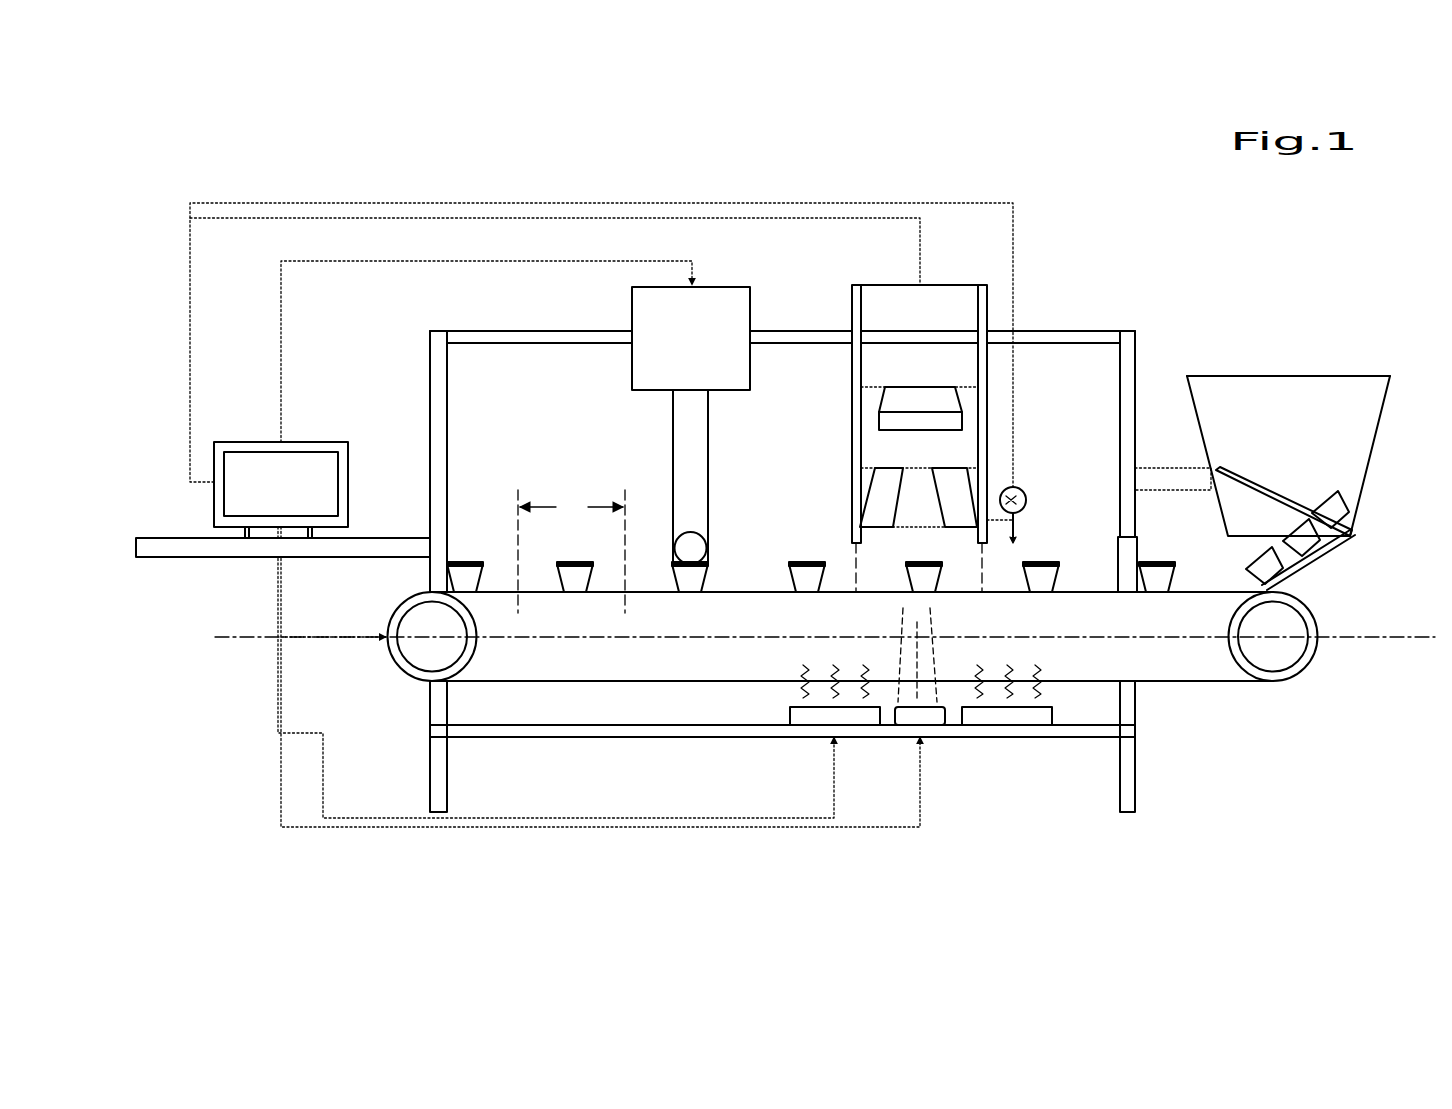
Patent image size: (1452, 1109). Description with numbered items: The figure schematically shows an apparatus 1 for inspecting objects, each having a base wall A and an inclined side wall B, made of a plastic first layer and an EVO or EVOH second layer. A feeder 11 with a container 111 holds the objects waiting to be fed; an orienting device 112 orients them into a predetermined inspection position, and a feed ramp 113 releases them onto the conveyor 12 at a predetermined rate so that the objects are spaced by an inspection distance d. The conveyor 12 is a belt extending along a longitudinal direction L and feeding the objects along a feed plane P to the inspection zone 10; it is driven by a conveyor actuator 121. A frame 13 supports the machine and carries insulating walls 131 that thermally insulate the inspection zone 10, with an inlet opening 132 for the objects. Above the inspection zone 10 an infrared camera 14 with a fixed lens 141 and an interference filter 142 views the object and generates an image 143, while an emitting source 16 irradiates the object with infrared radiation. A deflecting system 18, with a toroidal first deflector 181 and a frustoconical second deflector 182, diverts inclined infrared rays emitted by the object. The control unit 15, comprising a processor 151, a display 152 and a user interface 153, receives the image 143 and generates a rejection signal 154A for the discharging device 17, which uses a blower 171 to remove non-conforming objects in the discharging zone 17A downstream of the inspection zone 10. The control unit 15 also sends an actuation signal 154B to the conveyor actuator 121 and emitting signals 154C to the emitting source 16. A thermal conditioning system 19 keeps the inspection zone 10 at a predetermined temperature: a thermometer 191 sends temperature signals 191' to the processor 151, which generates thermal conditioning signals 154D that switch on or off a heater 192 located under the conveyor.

The apparatus for inspecting an object 1 is at (1040, 280).
The inspection zone 10 is at (877, 560).
The feeder 11 is at (1330, 368).
The container 111 is at (1217, 375).
The orienting device 112 is at (1253, 488).
The feed ramp 113 is at (1317, 558).
The conveyor 12 is at (1240, 685).
The conveyor actuator 121 is at (1280, 655).
The frame 13 is at (1130, 777).
The insulating wall 131 is at (1128, 368).
The inlet opening 132 is at (1140, 553).
The camera 14 is at (957, 300).
The fixed lens 141 is at (935, 398).
The interference filter 142 is at (950, 418).
The image 143 is at (765, 218).
The control unit 15 is at (235, 440).
The processor 151 is at (260, 532).
The display 152 is at (313, 470).
The user interface 153 is at (245, 495).
The rejection signal 154A is at (360, 262).
The actuation signal 154B is at (347, 648).
The emitting signals 154C is at (760, 828).
The thermal conditioning signals 154D is at (593, 818).
The emitting source 16 is at (928, 717).
The discharging device 17 is at (715, 328).
The discharging zone 17A is at (663, 527).
The blower 171 is at (693, 453).
The deflecting system 18 is at (888, 467).
The first deflector 181 is at (865, 478).
The second deflector 182 is at (950, 478).
The thermal conditioning system 19 is at (1040, 727).
The thermometer 191 is at (1024, 495).
The temperature signals 191' is at (601, 297).
The heater 192 is at (987, 717).
The base wall A is at (690, 593).
The side wall B is at (713, 573).
The feed plane P is at (1093, 592).
The longitudinal direction L is at (1420, 637).
The inspection distance d is at (571, 551).